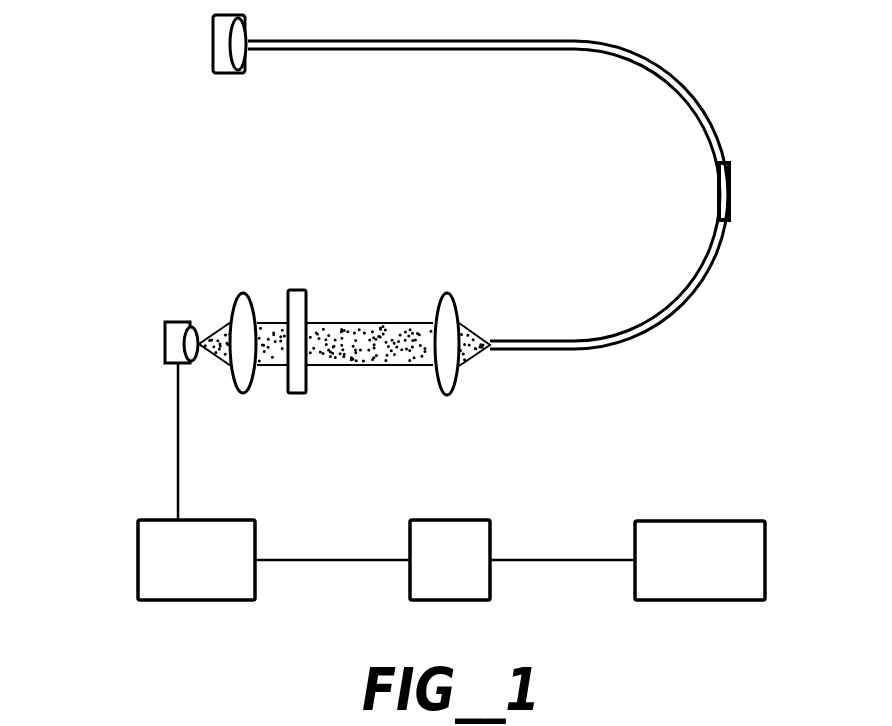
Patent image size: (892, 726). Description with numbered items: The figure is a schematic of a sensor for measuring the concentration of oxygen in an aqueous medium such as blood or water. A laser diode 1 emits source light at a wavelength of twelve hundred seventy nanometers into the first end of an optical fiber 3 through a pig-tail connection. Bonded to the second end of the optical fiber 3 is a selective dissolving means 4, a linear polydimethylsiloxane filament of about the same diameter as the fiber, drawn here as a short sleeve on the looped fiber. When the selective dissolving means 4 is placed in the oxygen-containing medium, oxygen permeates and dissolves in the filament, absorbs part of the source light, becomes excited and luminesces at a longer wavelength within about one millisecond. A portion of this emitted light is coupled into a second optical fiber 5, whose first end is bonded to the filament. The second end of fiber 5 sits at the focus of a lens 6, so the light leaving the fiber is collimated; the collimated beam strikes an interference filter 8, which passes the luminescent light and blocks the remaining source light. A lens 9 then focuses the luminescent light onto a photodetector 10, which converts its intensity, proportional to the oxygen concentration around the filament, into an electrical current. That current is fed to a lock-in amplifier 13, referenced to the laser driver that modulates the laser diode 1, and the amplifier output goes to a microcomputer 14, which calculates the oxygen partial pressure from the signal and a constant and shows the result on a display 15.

The laser diode 1 is at (247, 63).
The optical fiber 3 is at (627, 57).
The selective dissolving means 4 is at (718, 198).
The optical fiber 5 is at (620, 349).
The lens 6 is at (452, 296).
The interference filter 8 is at (307, 377).
The lens 9 is at (243, 293).
The photodetector 10 is at (184, 365).
The lock-in amplifier 13 is at (138, 565).
The microcomputer 14 is at (470, 520).
The display 15 is at (765, 572).